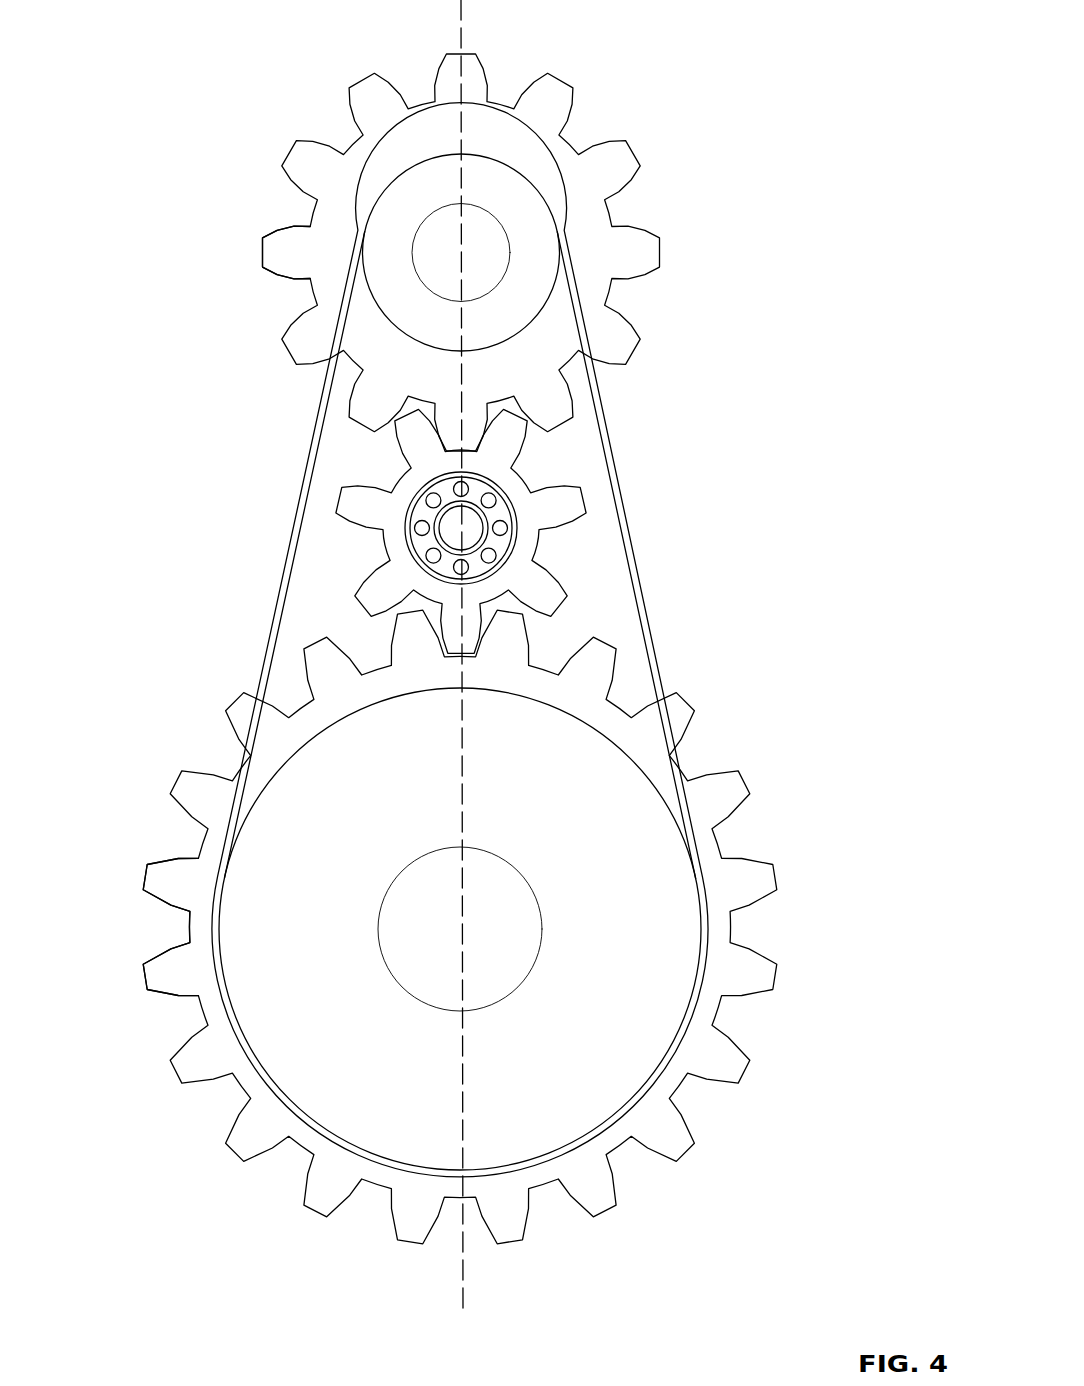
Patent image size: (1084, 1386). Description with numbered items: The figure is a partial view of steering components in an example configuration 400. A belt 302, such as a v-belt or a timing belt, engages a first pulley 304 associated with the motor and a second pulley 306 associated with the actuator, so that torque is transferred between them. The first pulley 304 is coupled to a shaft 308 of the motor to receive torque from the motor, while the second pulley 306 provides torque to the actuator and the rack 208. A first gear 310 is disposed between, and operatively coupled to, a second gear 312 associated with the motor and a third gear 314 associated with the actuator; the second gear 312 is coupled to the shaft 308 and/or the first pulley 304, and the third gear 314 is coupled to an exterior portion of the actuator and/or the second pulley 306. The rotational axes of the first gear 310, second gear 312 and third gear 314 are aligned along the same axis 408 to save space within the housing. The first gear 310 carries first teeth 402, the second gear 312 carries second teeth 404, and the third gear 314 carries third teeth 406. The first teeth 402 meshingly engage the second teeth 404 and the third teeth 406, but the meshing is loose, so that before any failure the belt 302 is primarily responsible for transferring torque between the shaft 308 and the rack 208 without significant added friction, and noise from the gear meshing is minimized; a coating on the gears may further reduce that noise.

The configuration 400 is at (696, 52).
The rack 208 is at (456, 944).
The belt 302 is at (605, 425).
The first pulley 304 is at (516, 331).
The second pulley 306 is at (428, 1106).
The shaft 308 is at (477, 208).
The first gear 310 is at (523, 545).
The second gear 312 is at (288, 258).
The third gear 314 is at (202, 930).
The first teeth 402 is at (364, 512).
The second teeth 404 is at (318, 190).
The third teeth 406 is at (207, 800).
The axis 408 is at (463, 1272).